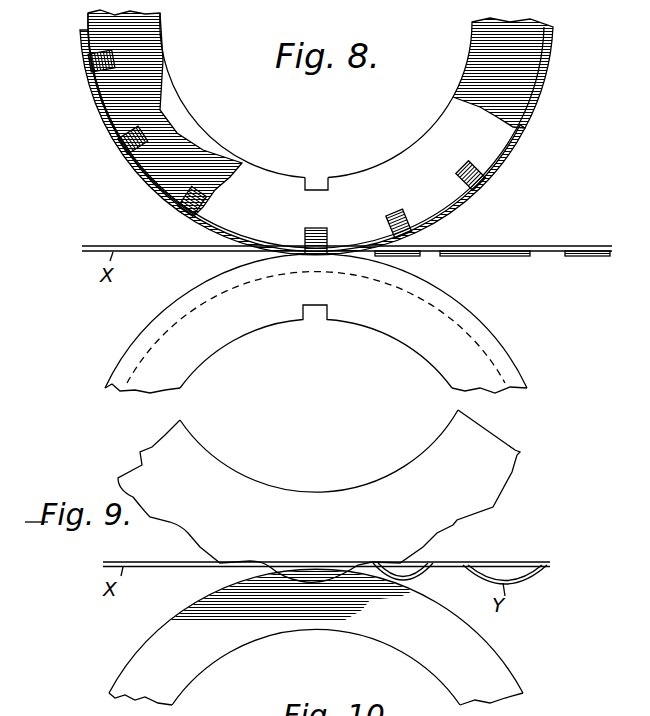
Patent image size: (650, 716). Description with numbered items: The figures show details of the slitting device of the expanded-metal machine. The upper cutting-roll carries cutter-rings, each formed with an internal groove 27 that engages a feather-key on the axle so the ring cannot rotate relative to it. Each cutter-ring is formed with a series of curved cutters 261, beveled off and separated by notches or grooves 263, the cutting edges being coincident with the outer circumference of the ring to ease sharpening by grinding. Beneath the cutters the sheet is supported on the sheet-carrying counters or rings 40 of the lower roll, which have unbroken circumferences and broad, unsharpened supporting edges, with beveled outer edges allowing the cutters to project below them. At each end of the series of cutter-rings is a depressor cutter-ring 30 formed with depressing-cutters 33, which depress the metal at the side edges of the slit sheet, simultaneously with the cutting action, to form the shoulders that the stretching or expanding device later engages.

In FIG. 8, the internal groove 27 is at (318, 183).
In FIG. 9, the depressor cutter-ring 30 is at (319, 496).
In FIG. 8, the depressing-cutters 33 is at (124, 152).
In FIG. 9, the depressing-cutters 33 is at (496, 506).
In FIG. 8, the sheet-carrying counters or rings 40 is at (316, 323).
In FIG. 9, the sheet-carrying counters or rings 40 is at (316, 637).
In FIG. 8, the curved cutters 261 is at (153, 183).
In FIG. 8, the notches or grooves 263 is at (124, 158).